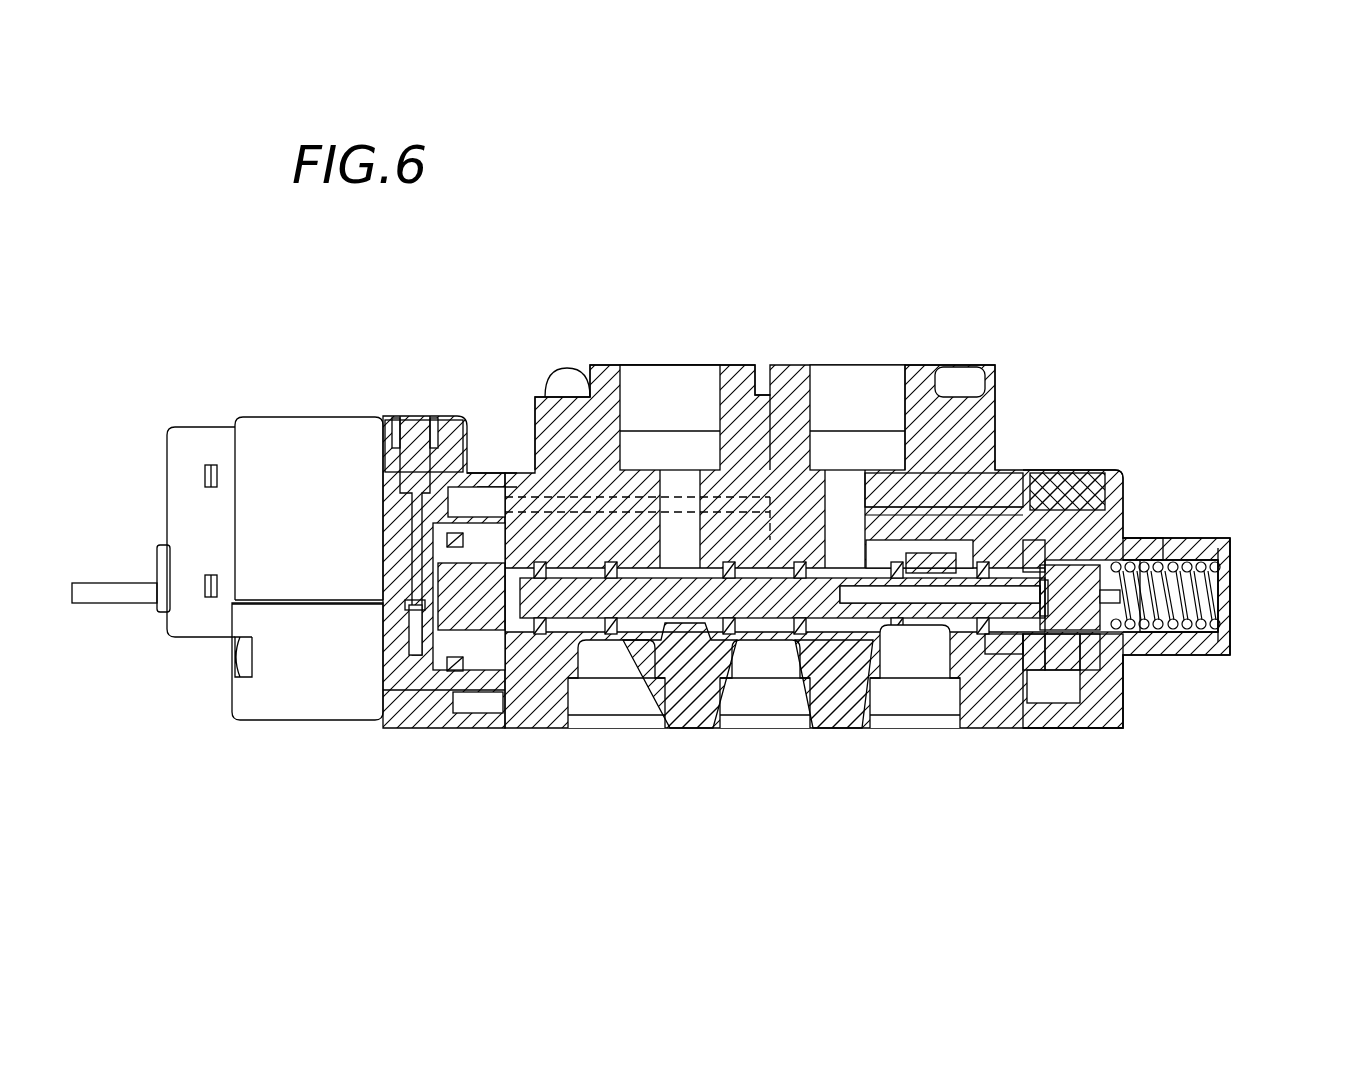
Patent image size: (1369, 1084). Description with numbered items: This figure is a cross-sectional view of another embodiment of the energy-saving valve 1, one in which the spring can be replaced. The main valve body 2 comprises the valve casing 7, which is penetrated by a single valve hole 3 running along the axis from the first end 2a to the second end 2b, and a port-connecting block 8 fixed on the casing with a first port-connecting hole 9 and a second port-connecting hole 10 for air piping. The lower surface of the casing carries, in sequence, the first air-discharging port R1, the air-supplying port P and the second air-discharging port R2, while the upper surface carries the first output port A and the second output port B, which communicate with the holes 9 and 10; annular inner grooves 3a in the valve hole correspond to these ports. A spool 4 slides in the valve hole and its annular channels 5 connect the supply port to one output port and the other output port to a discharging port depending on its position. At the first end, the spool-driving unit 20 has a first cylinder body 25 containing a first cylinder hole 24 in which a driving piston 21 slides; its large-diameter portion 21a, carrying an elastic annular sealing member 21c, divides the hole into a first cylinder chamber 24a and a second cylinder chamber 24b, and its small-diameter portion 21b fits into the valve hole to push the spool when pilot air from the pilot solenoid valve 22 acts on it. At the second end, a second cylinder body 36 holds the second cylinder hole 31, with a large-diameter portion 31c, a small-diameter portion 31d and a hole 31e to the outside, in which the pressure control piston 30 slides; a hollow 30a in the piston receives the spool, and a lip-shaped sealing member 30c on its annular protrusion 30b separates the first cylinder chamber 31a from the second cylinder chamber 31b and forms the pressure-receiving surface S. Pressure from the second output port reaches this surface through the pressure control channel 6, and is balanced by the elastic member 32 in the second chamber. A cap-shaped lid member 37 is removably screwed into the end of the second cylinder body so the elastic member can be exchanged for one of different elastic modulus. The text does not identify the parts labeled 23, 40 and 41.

The valve 1 is at (827, 194).
The main valve body 2 is at (980, 287).
The first end 2a is at (503, 702).
The second end 2b is at (1045, 690).
The valve hole 3 is at (640, 505).
The annular inner groove 3a is at (673, 628).
The spool 4 is at (778, 580).
The annular channel 5 is at (840, 625).
The pressure control channel 6 is at (970, 597).
The valve casing 7 is at (940, 493).
The port-connecting block 8 is at (933, 487).
The first port-connecting hole 9 is at (688, 420).
The second port-connecting hole 10 is at (868, 420).
The spool-driving unit 20 is at (364, 386).
The driving piston 21 is at (463, 570).
The large-diameter portion 21a is at (438, 422).
The small-diameter portion 21b is at (495, 585).
The elastic annular sealing member 21c is at (445, 655).
The pilot solenoid valve 22 is at (292, 418).
The pilot passage 23 is at (745, 520).
The first cylinder hole 24 is at (398, 792).
The first cylinder chamber 24a is at (455, 660).
The second cylinder chamber 24b is at (470, 648).
The first cylinder body 25 is at (420, 712).
The pressure control piston 30 is at (1108, 600).
The hollow 30a is at (1047, 617).
The annular protrusion 30b is at (1090, 690).
The lip-shaped sealing member 30c is at (1068, 690).
The second cylinder hole 31 is at (1278, 726).
The first cylinder chamber 31a is at (1037, 560).
The second cylinder chamber 31b is at (1232, 560).
The large-diameter portion 31c is at (1170, 645).
The small-diameter portion 31d is at (1196, 681).
The hole 31e is at (1157, 543).
The elastic member 32 is at (1187, 563).
The second cylinder body 36 is at (1117, 720).
The lid member 37 is at (1232, 600).
The cap 40 is at (967, 505).
The seal insert 41 is at (1093, 503).
The first output port A is at (696, 507).
The second output port B is at (860, 507).
The air-supplying port P is at (765, 690).
The first air-discharging port R1 is at (607, 693).
The second air-discharging port R2 is at (922, 690).
The pressure-receiving surface S is at (1000, 633).